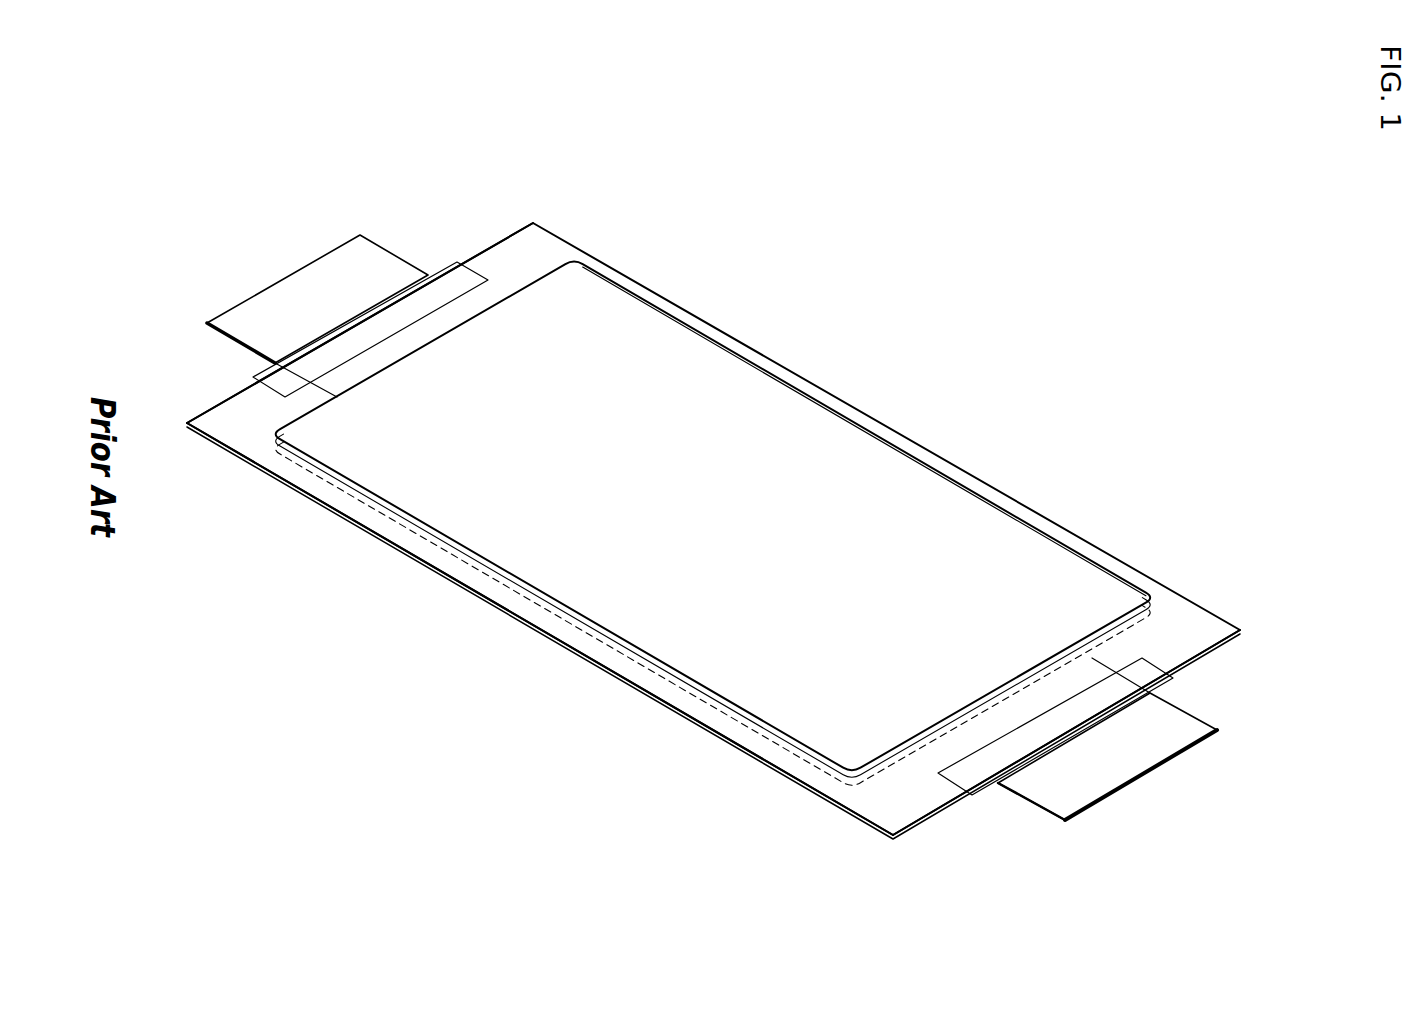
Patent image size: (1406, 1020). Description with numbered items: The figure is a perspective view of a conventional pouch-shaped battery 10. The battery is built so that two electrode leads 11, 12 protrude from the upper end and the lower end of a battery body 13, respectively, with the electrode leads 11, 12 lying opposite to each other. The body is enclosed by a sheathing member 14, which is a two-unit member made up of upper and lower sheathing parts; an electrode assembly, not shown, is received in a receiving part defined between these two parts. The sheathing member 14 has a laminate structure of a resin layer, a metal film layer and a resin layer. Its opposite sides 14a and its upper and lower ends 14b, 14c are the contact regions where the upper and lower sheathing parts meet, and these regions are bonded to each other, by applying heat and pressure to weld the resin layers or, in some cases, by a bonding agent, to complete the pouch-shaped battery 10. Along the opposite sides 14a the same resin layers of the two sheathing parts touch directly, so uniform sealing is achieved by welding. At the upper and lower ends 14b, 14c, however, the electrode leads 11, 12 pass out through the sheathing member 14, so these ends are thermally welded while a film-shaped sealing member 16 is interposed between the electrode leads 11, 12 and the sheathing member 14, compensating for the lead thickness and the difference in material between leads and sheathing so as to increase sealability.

The pouch-shaped battery 10 is at (192, 92).
The electrode lead 11 is at (310, 285).
The electrode lead 12 is at (1148, 773).
The battery body 13 is at (848, 443).
The sheathing member 14 is at (1215, 612).
The opposite sides 14a is at (535, 248).
The upper end 14b is at (703, 715).
The lower end 14c is at (913, 797).
The film-shaped sealing member 16 is at (1175, 678).